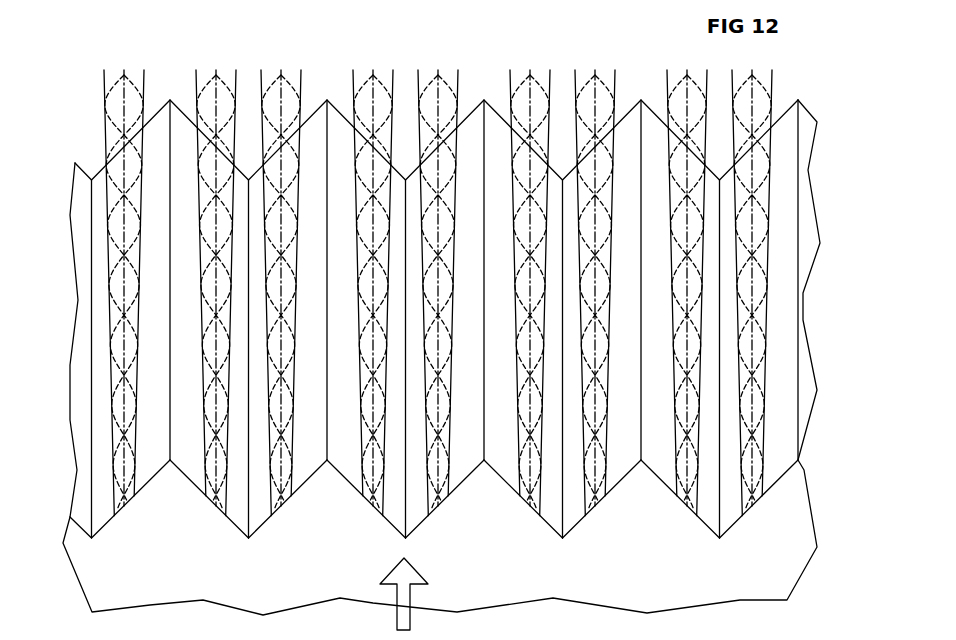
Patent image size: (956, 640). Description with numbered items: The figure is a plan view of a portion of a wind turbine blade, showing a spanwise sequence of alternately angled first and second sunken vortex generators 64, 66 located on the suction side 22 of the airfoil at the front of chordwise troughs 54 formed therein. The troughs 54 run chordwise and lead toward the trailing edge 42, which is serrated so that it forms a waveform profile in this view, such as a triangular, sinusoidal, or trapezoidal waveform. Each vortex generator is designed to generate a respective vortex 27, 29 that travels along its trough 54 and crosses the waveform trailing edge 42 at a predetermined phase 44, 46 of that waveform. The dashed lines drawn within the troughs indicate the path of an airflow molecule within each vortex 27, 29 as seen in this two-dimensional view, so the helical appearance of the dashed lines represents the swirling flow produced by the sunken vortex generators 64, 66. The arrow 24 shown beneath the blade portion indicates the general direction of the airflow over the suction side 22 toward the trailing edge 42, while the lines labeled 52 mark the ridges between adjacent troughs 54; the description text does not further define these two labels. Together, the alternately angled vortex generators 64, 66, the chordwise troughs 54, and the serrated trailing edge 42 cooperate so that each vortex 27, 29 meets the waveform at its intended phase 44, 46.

The suction side 22 is at (655, 589).
The flow direction arrow 24 is at (429, 567).
The vortex 27 is at (602, 413).
The vortex 29 is at (514, 414).
The trailing edge 42 is at (474, 104).
The predetermined phase 44 is at (108, 178).
The predetermined phase 46 is at (233, 173).
The ridge line 52 is at (483, 360).
The chordwise troughs 54 is at (560, 355).
The first sunken vortex generators 64 is at (110, 522).
The second sunken vortex generators 66 is at (230, 523).